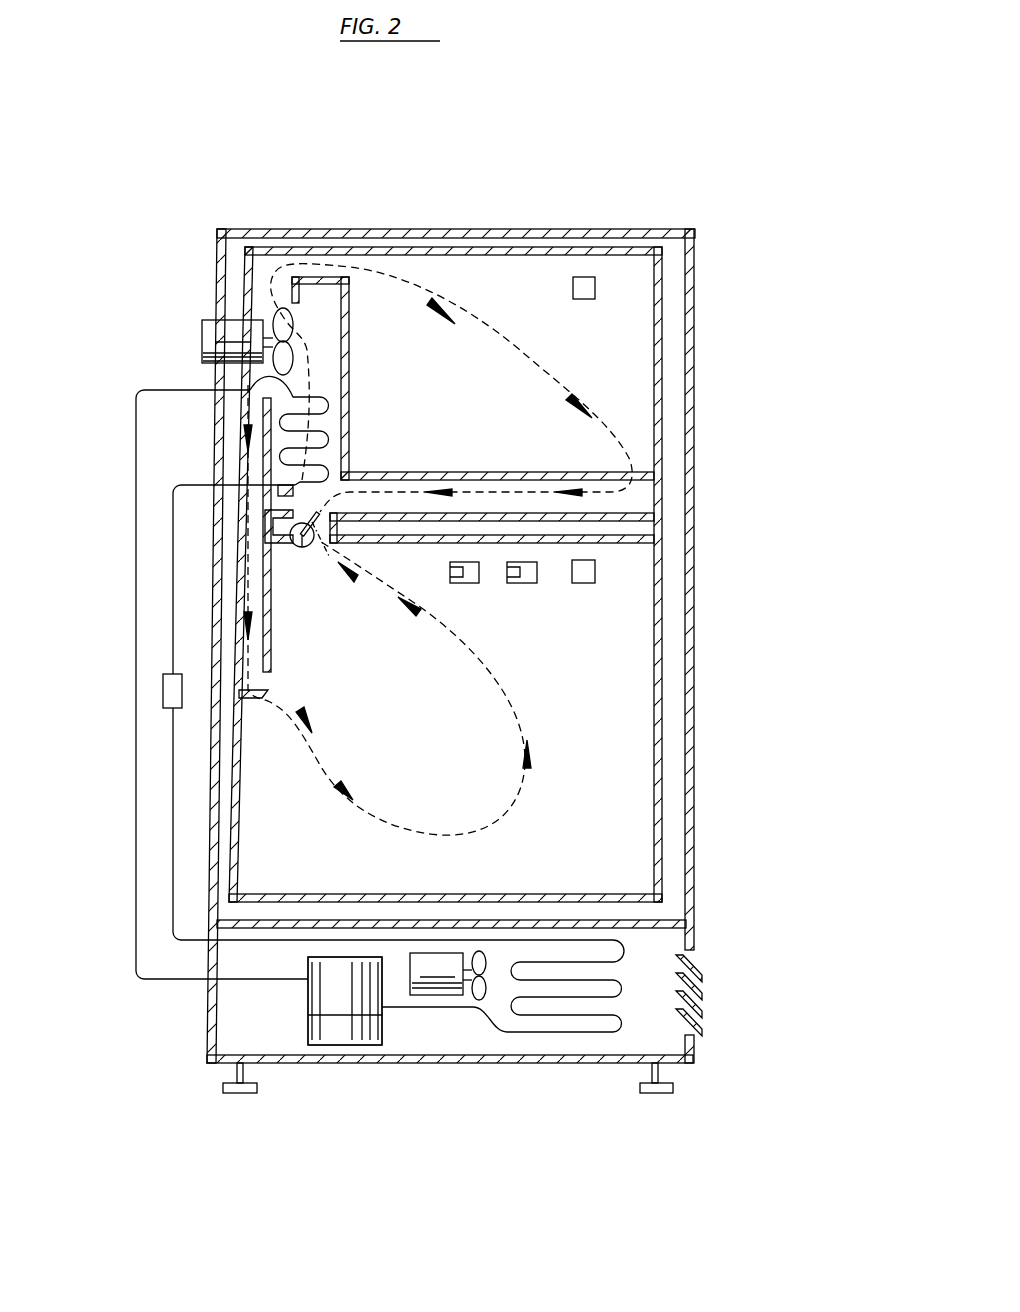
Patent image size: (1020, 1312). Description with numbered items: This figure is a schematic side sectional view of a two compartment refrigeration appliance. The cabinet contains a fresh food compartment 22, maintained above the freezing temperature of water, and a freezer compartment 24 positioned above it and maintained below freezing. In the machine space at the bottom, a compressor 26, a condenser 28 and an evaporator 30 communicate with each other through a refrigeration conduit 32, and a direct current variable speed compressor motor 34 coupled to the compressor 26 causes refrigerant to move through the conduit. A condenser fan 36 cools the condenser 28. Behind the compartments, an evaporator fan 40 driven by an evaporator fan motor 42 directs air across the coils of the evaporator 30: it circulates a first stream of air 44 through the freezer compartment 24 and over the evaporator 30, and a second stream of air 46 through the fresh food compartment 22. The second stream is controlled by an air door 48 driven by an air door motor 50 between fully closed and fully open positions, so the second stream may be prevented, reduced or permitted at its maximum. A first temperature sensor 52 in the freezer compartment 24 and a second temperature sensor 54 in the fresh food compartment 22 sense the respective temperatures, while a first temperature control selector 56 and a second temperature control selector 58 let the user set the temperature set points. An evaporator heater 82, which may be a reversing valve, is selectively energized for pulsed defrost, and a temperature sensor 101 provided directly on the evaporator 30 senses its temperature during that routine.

The fresh food compartment 22 is at (622, 752).
The freezer compartment 24 is at (625, 370).
The compressor 26 is at (317, 990).
The condenser 28 is at (613, 990).
The evaporator 30 is at (327, 433).
The refrigeration conduit 32 is at (136, 805).
The direct current variable speed compressor motor 34 is at (333, 1042).
The condenser fan 36 is at (479, 993).
The evaporator fan 40 is at (283, 323).
The evaporator fan motor 42 is at (202, 340).
The first stream of air 44 is at (336, 262).
The second stream of air 46 is at (252, 652).
The air door 48 is at (310, 548).
The air door motor 50 is at (268, 540).
The first temperature sensor 52 is at (584, 290).
The second temperature sensor 54 is at (582, 583).
The first temperature control selector 56 is at (468, 583).
The second temperature control selector 58 is at (522, 583).
The evaporator heater 82 is at (163, 706).
The temperature sensor 101 is at (280, 490).